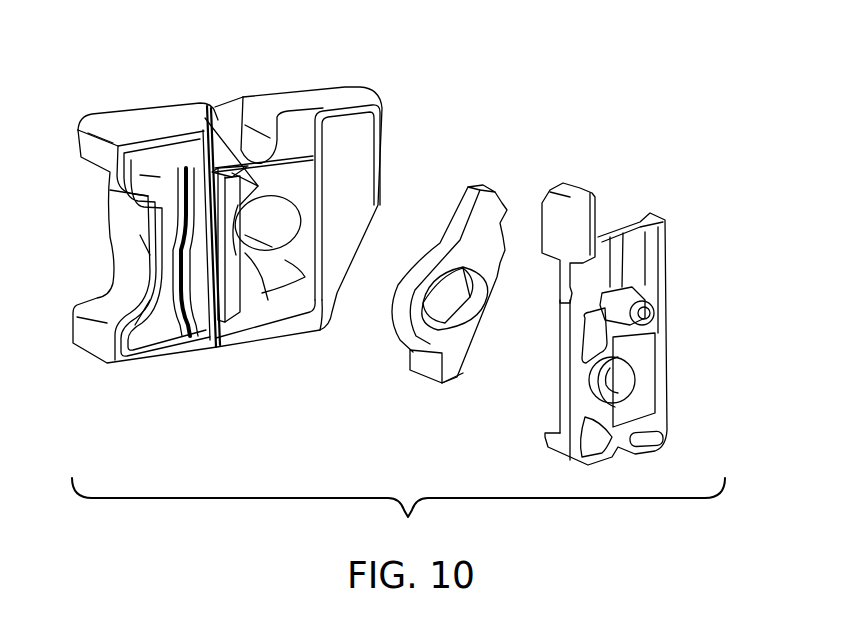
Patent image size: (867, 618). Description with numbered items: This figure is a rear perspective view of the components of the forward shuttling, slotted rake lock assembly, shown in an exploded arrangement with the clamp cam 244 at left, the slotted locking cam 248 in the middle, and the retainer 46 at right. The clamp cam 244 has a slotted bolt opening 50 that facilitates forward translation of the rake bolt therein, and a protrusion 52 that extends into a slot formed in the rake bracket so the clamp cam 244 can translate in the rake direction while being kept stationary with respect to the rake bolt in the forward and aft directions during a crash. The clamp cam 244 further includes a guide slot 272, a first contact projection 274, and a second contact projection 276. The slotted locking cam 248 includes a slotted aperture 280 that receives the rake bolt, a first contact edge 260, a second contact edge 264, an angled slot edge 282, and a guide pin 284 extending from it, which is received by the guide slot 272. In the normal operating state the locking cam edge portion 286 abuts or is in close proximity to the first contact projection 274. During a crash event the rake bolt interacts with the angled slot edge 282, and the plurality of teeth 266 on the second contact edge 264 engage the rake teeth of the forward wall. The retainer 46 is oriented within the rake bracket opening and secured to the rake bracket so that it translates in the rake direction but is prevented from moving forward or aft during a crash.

The clamp cam 244 is at (398, 82).
The first contact projection 274 is at (207, 127).
The slotted bolt opening 50 is at (287, 214).
The protrusion 52 is at (200, 333).
The second contact projection 276 is at (242, 305).
The guide slot 272 is at (263, 288).
The locking cam edge portion 286 is at (433, 253).
The second contact edge 264 is at (495, 180).
The teeth 266 is at (530, 193).
The first contact edge 260 is at (413, 310).
The slotted aperture 280 is at (458, 288).
The angled slot edge 282 is at (453, 323).
The guide pin 284 is at (410, 362).
The slotted locking cam 248 is at (438, 303).
The retainer 46 is at (627, 308).